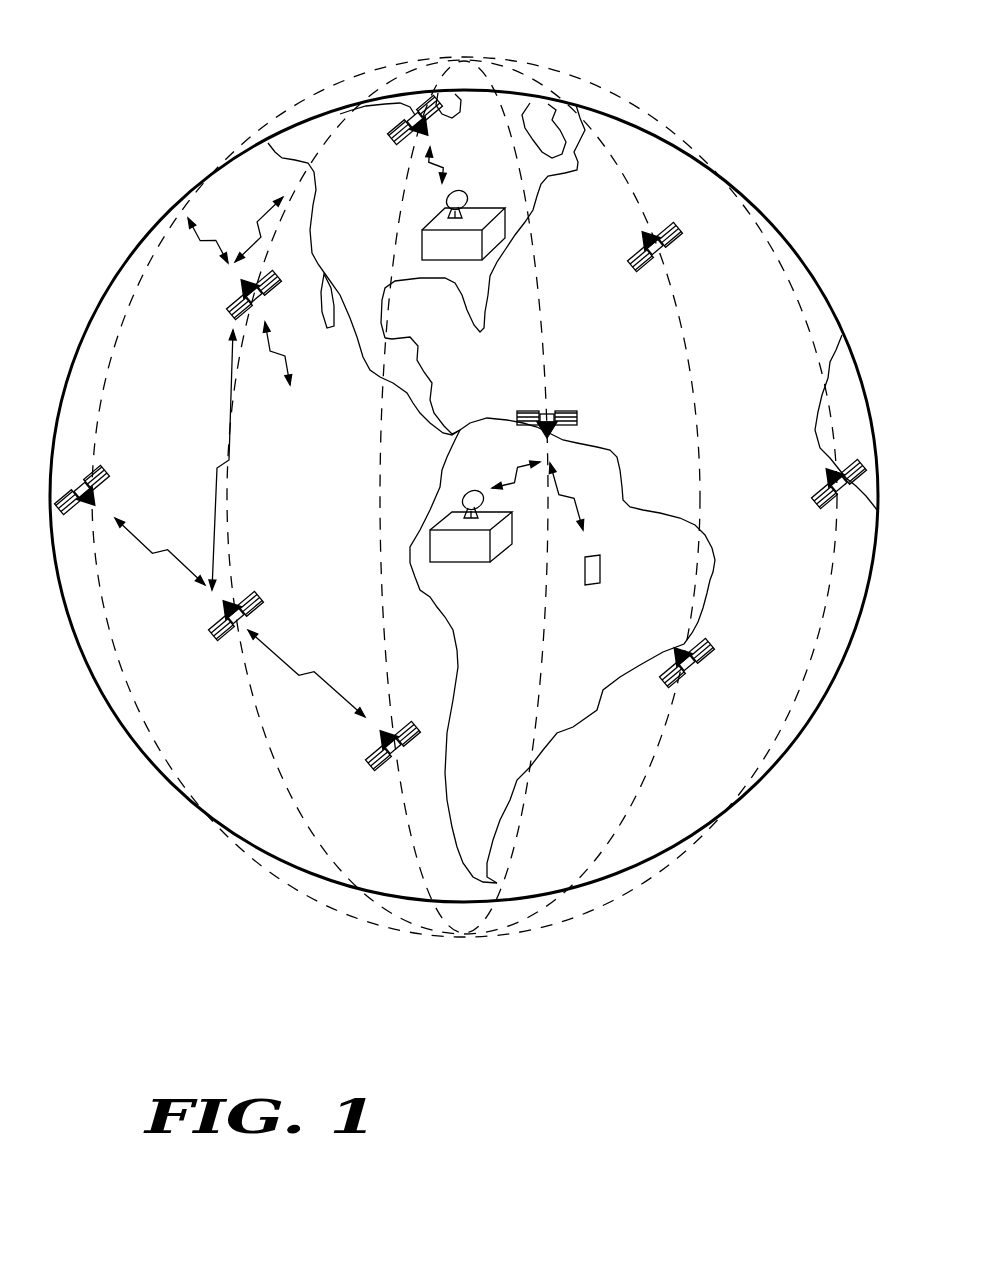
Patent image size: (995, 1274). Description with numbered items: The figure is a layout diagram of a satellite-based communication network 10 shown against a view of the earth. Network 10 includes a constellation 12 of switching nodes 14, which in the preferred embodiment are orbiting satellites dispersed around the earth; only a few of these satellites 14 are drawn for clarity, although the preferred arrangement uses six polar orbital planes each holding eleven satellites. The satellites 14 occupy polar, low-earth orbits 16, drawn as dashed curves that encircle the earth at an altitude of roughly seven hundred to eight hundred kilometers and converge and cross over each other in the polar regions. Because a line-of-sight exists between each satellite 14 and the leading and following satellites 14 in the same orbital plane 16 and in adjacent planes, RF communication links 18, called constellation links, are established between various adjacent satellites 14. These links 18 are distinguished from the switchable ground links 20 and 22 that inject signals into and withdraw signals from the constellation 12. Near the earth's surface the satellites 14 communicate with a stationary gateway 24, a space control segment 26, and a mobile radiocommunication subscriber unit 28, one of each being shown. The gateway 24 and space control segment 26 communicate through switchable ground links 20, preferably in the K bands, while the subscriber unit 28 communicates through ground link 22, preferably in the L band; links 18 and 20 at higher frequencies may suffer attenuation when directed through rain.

The satellite-based communication network 10 is at (465, 1003).
The constellation 12 is at (470, 62).
The switching nodes 14 is at (402, 140).
The polar, low-earth orbits 16 is at (800, 306).
The RF communication links 18 is at (204, 242).
The switchable ground links 20 is at (446, 168).
The ground links 22 is at (578, 507).
The gateway 24 is at (468, 564).
The space control segment 26 is at (484, 206).
The mobile radiocommunication subscriber unit 28 is at (590, 588).